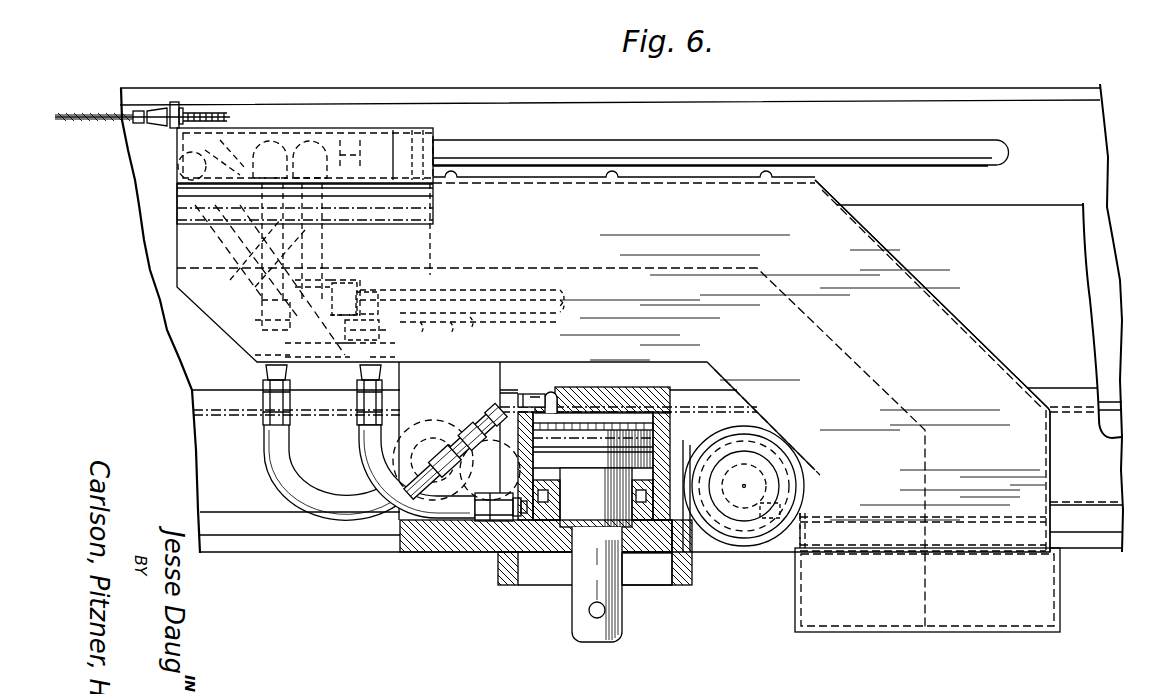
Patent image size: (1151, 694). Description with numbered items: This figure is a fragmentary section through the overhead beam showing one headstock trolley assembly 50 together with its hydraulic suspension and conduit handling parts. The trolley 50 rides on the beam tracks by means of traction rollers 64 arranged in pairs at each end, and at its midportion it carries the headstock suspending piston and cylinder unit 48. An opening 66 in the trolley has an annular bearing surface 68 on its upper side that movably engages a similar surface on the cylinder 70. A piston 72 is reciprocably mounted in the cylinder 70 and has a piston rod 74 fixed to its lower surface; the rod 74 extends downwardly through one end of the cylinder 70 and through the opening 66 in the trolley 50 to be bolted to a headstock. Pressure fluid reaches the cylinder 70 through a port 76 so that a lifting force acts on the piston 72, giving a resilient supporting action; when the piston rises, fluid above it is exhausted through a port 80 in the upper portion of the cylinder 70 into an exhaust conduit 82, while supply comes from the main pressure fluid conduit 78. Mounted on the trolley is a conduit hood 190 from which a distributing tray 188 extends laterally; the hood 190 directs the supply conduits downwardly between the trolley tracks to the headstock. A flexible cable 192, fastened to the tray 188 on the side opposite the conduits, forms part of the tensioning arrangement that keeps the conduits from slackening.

The headstock suspending piston and cylinder unit 48 is at (555, 434).
The headstock trolley assembly 50 is at (488, 542).
The traction rollers 64 is at (733, 558).
The opening 66 is at (658, 535).
The annular bearing surface 68 is at (660, 537).
The cylinder 70 is at (677, 412).
The piston 72 is at (583, 450).
The piston rod 74 is at (580, 600).
The port 76 is at (540, 508).
The main pressure fluid conduit 78 is at (363, 457).
The port 80 is at (548, 396).
The exhaust conduit 82 is at (280, 460).
The distributing tray 188 is at (432, 130).
The conduit hood 190 is at (1002, 363).
The flexible cable 192 is at (86, 116).